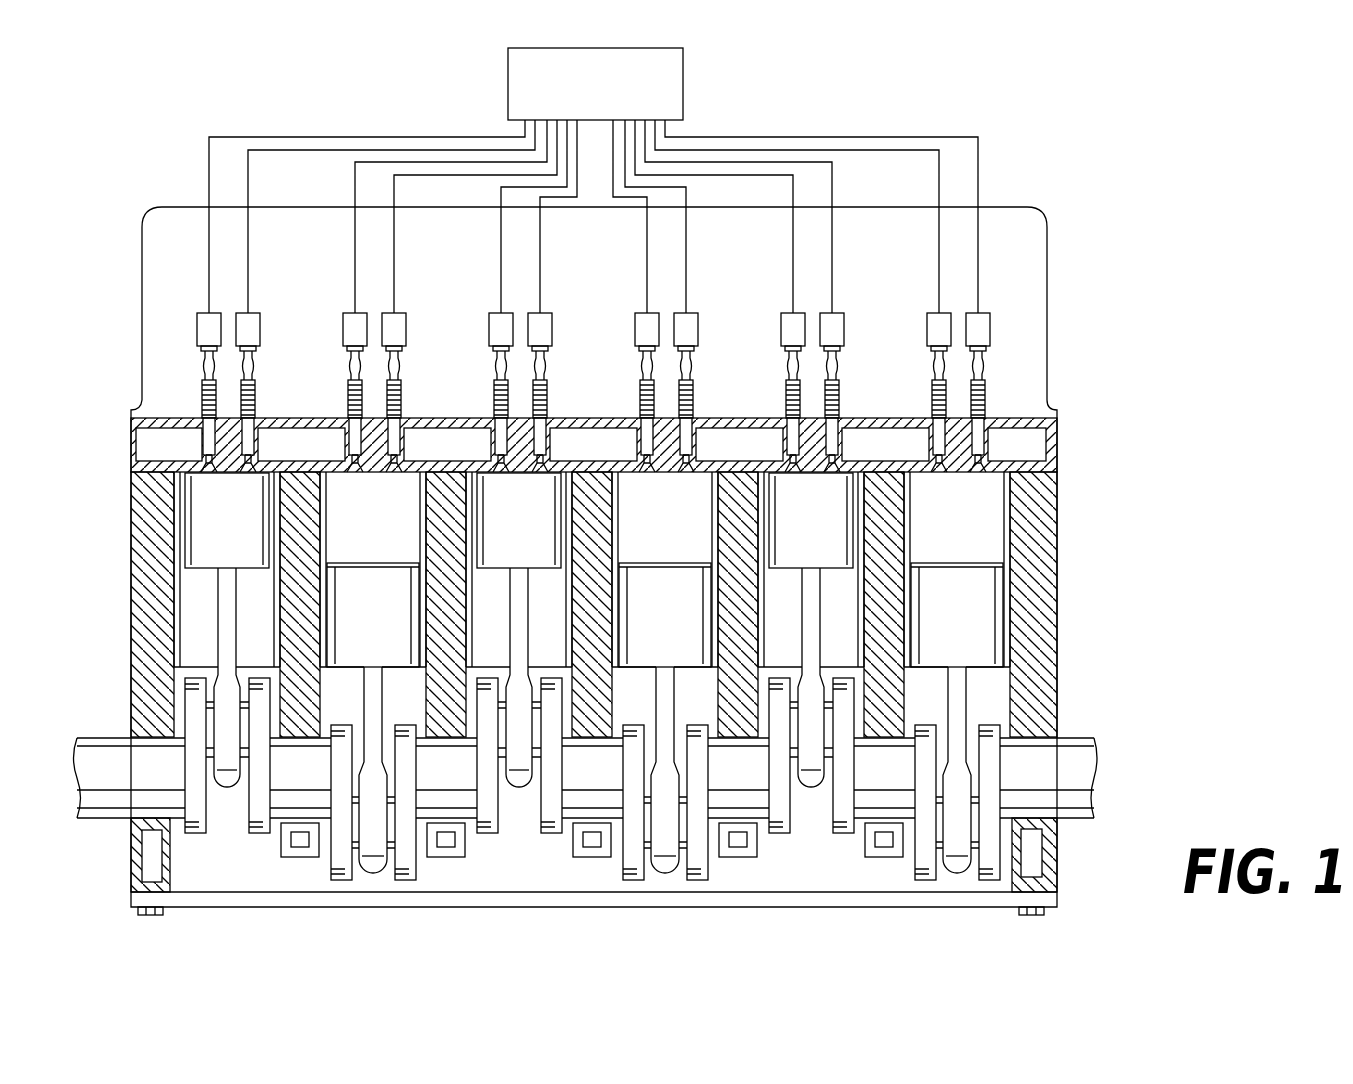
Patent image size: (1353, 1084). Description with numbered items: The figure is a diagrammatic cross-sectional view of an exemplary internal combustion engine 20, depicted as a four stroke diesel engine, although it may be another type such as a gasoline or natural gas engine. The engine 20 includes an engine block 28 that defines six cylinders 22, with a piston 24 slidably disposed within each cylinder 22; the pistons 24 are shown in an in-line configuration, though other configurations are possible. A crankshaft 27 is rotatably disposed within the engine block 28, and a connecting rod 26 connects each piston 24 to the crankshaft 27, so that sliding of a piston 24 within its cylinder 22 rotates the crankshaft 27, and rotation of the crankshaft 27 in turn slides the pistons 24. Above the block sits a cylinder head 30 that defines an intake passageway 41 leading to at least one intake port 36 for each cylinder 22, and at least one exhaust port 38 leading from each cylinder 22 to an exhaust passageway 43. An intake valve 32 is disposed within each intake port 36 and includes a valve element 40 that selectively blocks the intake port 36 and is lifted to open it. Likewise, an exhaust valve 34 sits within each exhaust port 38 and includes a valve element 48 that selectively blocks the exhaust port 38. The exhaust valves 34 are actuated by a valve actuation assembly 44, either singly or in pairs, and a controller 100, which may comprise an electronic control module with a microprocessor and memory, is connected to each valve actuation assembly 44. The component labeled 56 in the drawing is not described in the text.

The internal combustion engine 20 is at (1124, 208).
The cylinder 22 is at (240, 629).
The piston 24 is at (183, 629).
The connecting rod 26 is at (227, 648).
The crankshaft 27 is at (107, 783).
The engine block 28 is at (140, 483).
The cylinder head 30 is at (1057, 452).
The intake valve 32 is at (345, 418).
The exhaust valve 34 is at (200, 418).
The intake port 36 is at (230, 532).
The exhaust port 38 is at (230, 475).
The valve element 40 is at (255, 490).
The intake passageway 41 is at (284, 456).
The exhaust passageway 43 is at (430, 456).
The valve actuation assembly 44 is at (200, 312).
The valve element 48 is at (200, 457).
The injector solenoid 56 is at (200, 351).
The controller 100 is at (574, 96).